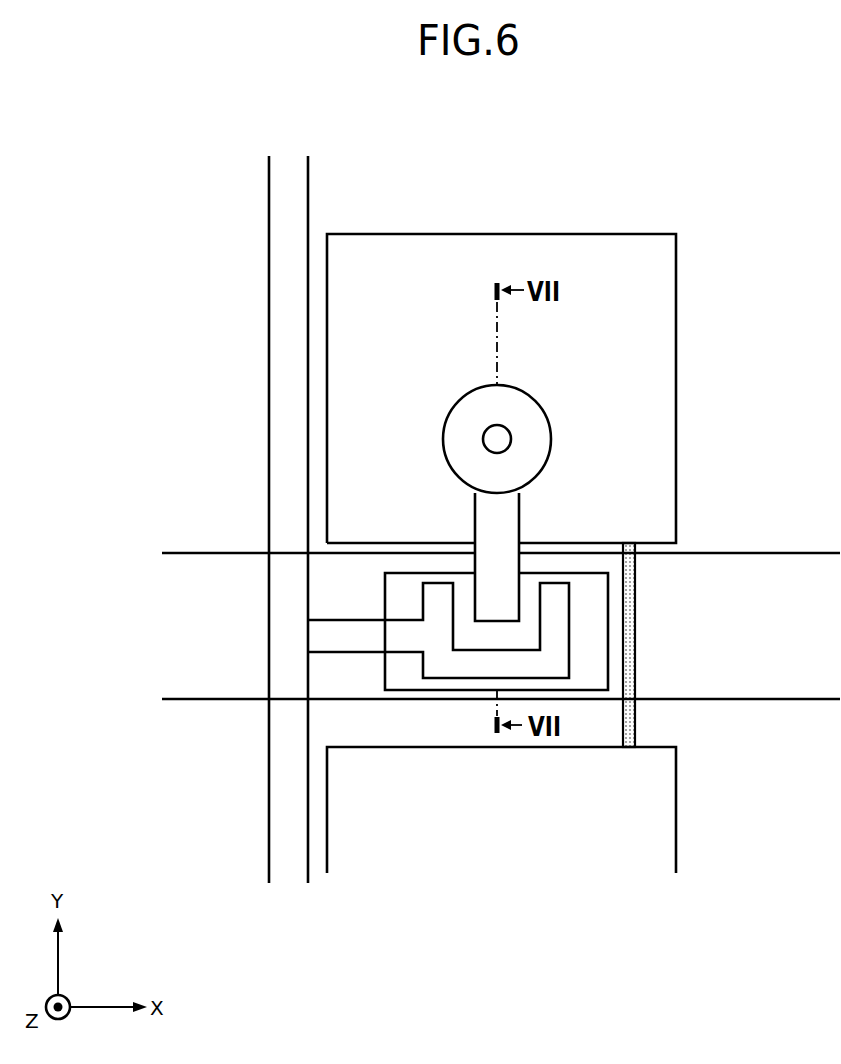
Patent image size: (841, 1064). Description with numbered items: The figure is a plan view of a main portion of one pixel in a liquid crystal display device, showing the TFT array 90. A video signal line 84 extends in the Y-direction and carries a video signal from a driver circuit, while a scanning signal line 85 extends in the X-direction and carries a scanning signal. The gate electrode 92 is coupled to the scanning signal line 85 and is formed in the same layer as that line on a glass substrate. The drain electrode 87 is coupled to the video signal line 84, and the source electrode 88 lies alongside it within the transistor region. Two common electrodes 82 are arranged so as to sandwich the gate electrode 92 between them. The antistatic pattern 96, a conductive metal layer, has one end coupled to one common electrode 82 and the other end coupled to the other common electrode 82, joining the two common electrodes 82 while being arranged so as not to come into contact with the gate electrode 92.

The TFT array 90 is at (730, 185).
The common electrode 82 is at (628, 400).
The video signal line 84 is at (313, 890).
The scanning signal line 85 is at (148, 553).
The drain electrode 87 is at (540, 668).
The source electrode 88 is at (519, 601).
The gate electrode 92 is at (405, 583).
The antistatic pattern 96 is at (629, 639).